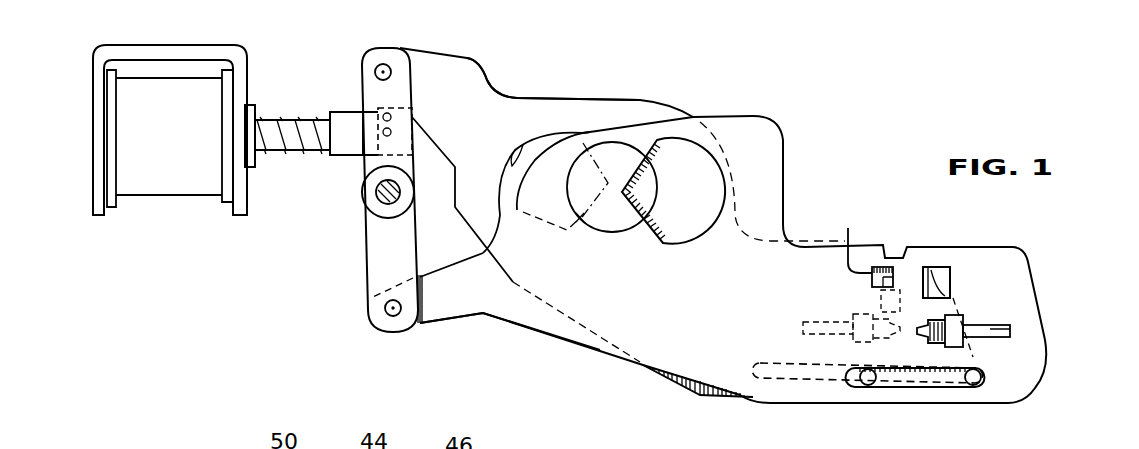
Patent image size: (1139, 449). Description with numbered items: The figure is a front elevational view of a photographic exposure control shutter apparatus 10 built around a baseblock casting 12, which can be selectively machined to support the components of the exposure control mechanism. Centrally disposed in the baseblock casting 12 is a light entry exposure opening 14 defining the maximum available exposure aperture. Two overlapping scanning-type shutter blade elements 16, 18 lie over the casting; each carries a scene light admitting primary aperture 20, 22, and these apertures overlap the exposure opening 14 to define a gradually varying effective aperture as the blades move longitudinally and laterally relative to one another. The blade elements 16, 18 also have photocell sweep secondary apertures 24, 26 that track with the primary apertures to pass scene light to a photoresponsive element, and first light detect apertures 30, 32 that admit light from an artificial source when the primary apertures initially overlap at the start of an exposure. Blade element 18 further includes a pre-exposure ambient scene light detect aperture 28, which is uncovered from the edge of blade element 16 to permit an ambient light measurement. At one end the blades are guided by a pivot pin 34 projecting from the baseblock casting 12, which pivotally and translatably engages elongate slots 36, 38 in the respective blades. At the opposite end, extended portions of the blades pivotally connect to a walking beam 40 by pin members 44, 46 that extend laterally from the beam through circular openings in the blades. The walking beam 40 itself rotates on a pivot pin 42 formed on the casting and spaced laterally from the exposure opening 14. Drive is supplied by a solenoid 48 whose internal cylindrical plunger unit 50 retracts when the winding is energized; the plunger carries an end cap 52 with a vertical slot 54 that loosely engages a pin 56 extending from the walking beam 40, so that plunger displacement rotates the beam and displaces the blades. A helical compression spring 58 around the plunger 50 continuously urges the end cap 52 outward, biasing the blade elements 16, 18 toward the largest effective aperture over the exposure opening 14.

The photographic exposure control shutter apparatus 10 is at (886, 76).
The baseblock casting 12 is at (897, 181).
The light entry exposure opening 14 is at (603, 233).
The shutter blade element 16 is at (527, 95).
The shutter blade element 18 is at (455, 325).
The scene light admitting primary aperture 20 is at (507, 163).
The scene light admitting primary aperture 22 is at (687, 240).
The photocell sweep secondary aperture 24 is at (800, 328).
The photocell sweep secondary aperture 26 is at (1010, 330).
The pre-exposure ambient scene light detect aperture 28 is at (848, 228).
The first light detect aperture 30 is at (872, 280).
The first light detect aperture 32 is at (952, 277).
The pivot pin 34 is at (868, 382).
The elongate slot 36 is at (773, 378).
The elongate slot 38 is at (963, 375).
The walking beam 40 is at (357, 275).
The pivot pin 42 is at (383, 196).
The pin member 44 is at (386, 66).
The pin member 46 is at (392, 318).
The solenoid 48 is at (153, 230).
The cylindrical plunger unit 50 is at (260, 120).
The end cap 52 is at (347, 157).
The vertical slot 54 is at (380, 110).
The pin 56 is at (391, 136).
The helical compression spring 58 is at (290, 153).